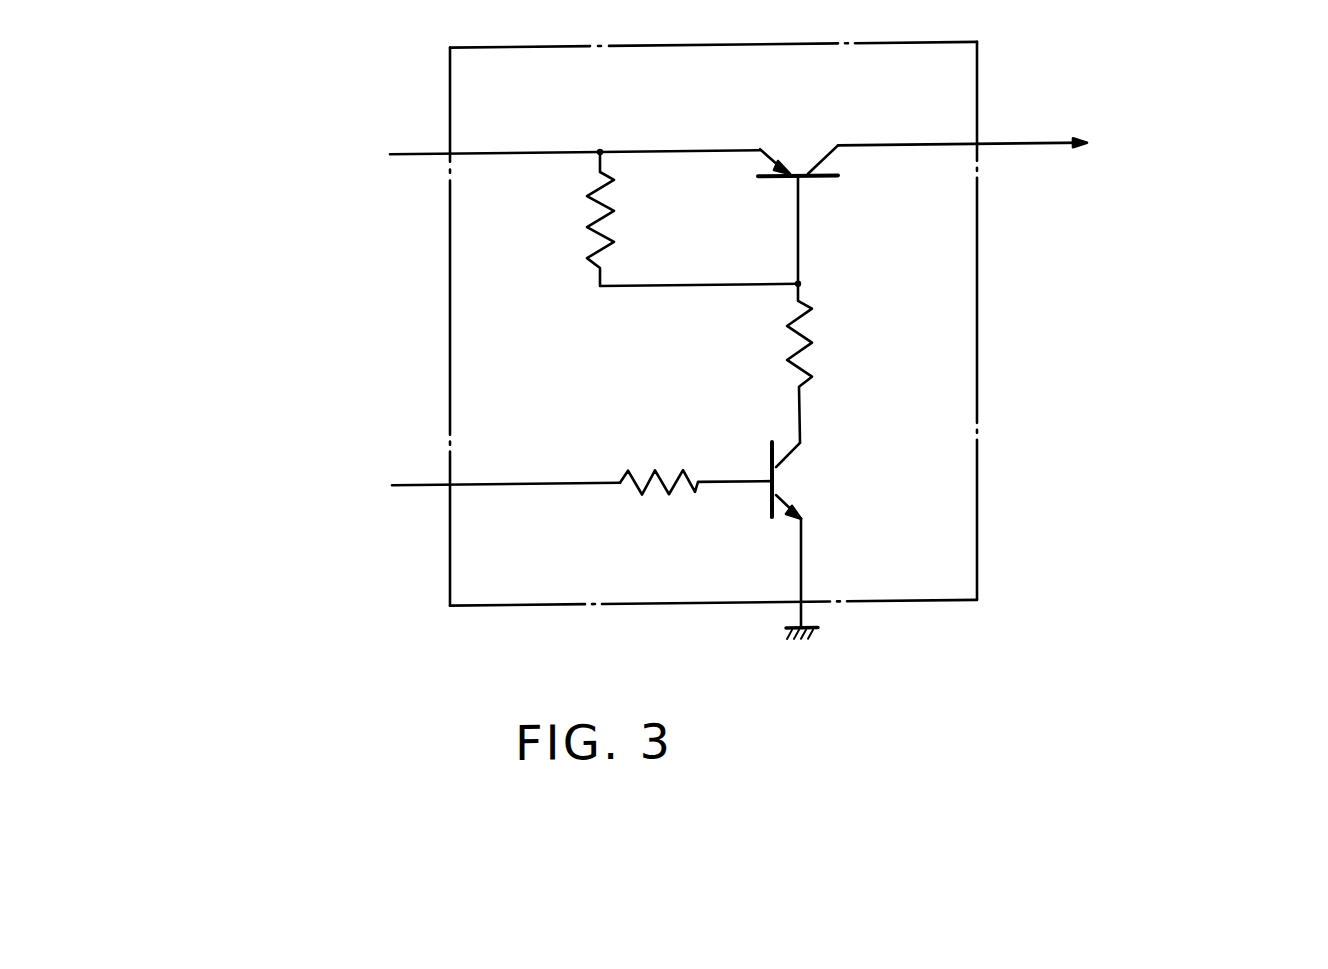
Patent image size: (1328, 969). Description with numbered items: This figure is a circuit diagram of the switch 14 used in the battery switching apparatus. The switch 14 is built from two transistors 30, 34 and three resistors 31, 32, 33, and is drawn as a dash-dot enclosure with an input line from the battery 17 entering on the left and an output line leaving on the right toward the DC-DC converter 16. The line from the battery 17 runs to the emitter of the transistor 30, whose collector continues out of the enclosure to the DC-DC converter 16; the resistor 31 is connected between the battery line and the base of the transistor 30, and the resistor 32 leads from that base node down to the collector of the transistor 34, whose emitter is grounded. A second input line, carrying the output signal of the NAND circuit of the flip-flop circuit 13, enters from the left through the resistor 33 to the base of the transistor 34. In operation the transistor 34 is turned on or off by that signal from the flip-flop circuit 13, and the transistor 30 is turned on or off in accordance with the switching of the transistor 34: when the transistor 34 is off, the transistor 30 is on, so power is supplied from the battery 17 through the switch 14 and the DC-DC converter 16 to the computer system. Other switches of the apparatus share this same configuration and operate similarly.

The switch 14 is at (977, 309).
The transistor 30 is at (797, 150).
The resistor 31 is at (589, 224).
The resistor 32 is at (791, 343).
The resistor 33 is at (652, 494).
The transistor 34 is at (790, 482).
The battery 17 is at (401, 154).
The DC-DC converter 16 is at (1073, 142).
The flip-flop circuit 13 is at (383, 484).